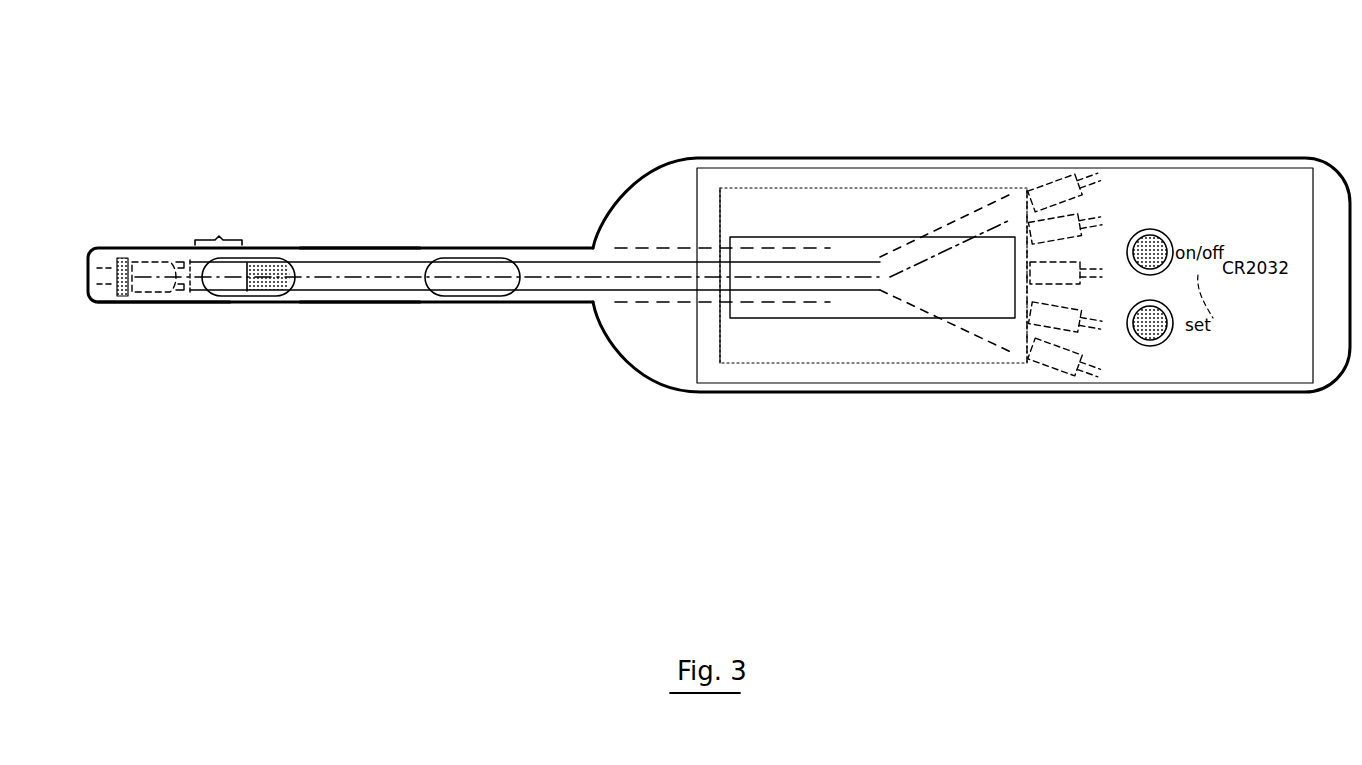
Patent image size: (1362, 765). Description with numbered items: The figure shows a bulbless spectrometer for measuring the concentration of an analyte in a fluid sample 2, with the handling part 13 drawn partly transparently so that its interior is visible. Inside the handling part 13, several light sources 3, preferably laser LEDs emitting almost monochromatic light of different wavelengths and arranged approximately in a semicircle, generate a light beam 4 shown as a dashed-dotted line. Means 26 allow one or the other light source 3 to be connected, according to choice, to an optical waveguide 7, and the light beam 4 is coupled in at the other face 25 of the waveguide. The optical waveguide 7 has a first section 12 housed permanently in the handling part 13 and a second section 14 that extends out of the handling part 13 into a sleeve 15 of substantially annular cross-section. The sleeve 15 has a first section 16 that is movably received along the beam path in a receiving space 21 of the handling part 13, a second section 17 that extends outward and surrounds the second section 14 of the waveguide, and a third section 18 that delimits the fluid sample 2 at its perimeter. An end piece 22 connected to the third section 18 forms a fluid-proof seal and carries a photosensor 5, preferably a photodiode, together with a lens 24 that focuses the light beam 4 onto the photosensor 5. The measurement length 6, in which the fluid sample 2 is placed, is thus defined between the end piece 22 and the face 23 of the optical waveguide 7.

The fluid sample 2 is at (230, 290).
The light sources 3 is at (1047, 197).
The light beam 4 is at (938, 253).
The photosensor 5 is at (143, 273).
The measurement length 6 is at (218, 225).
The optical waveguide 7 is at (378, 248).
The first section of the optical waveguide 12 is at (637, 283).
The handling part 13 is at (832, 388).
The second section of the optical waveguide 14 is at (533, 271).
The sleeve 15 is at (380, 310).
The first section of the sleeve 16 is at (650, 250).
The second section of the sleeve 17 is at (457, 300).
The third section of the sleeve 18 is at (217, 302).
The receiving space 21 is at (855, 224).
The end piece 22 is at (117, 310).
The face of the optical waveguide 23 is at (247, 270).
The lens 24 is at (182, 270).
The other face of the optical waveguide 25 is at (877, 253).
The means for connecting light source to optical waveguide 26 is at (950, 343).